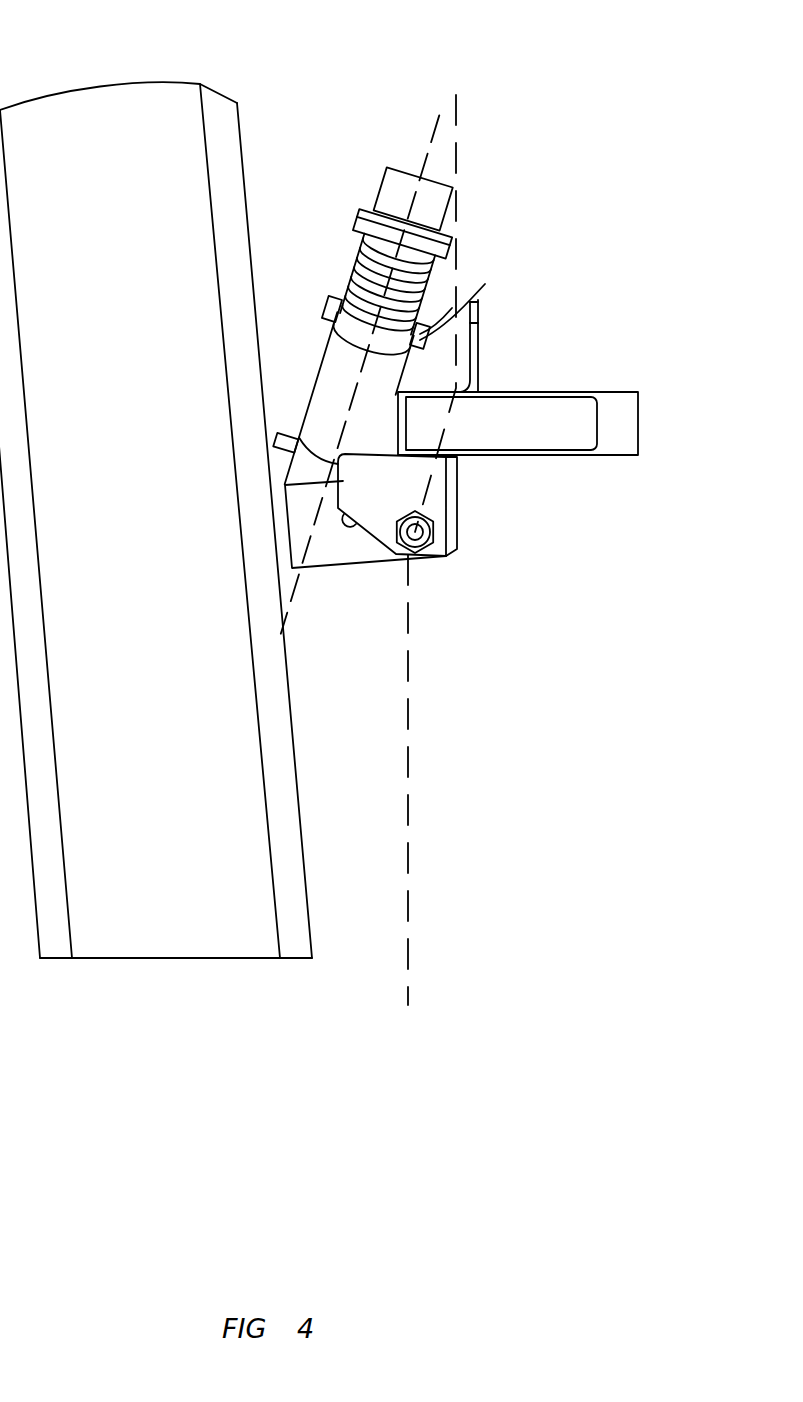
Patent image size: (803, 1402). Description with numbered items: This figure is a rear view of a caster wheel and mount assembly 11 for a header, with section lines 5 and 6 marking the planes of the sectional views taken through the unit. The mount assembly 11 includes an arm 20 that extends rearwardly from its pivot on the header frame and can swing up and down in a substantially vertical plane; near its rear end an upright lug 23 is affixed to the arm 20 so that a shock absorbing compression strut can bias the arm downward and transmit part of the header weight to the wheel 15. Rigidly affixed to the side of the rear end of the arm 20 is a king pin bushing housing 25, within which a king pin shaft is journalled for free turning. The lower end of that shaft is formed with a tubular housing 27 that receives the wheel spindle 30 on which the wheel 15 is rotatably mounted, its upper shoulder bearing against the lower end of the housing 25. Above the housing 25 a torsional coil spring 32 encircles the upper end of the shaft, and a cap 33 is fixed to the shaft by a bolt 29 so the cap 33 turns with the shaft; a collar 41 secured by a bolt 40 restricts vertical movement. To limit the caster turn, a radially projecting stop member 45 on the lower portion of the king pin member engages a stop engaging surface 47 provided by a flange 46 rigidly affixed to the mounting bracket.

The mount assembly 11 is at (565, 208).
The wheel 15 is at (290, 918).
The arm 20 is at (558, 392).
The upright lug 23 is at (478, 343).
The king pin bushing housing 25 is at (317, 398).
The tubular housing 27 is at (448, 554).
The bolt 29 is at (362, 217).
The wheel spindle 30 is at (283, 533).
The torsional coil spring 32 is at (357, 268).
The cap 33 is at (395, 182).
The bolt 40 is at (485, 284).
The collar 41 is at (452, 308).
The stop member 45 is at (278, 446).
The flange 46 is at (405, 487).
The stop engaging surface 47 is at (327, 495).
The section line 5- 5 is at (439, 115).
The section line 6- 6 is at (456, 75).